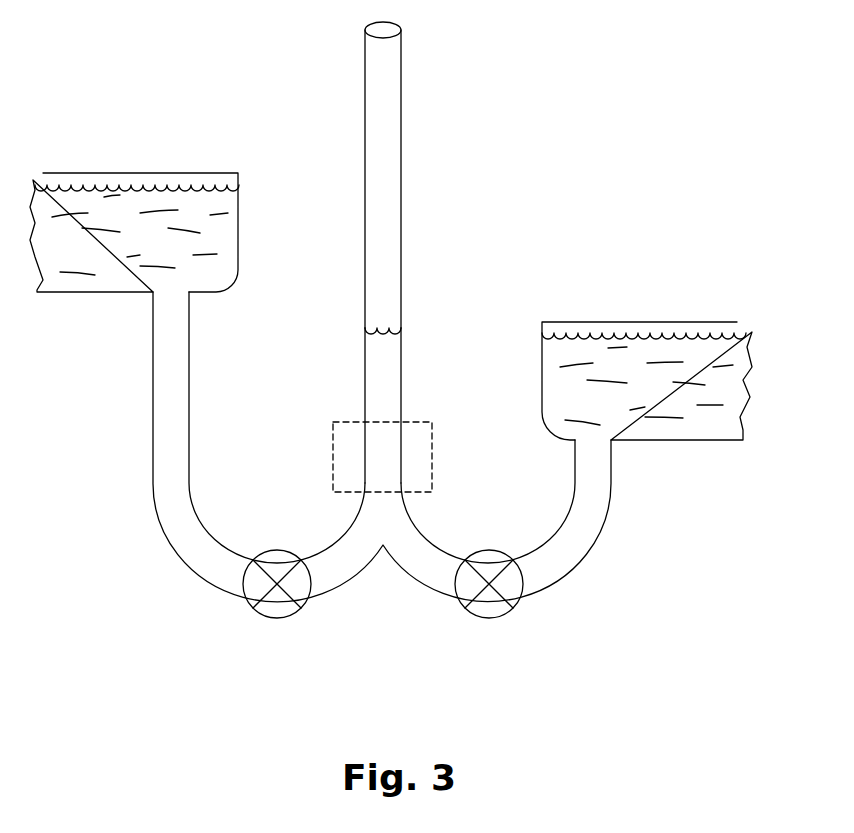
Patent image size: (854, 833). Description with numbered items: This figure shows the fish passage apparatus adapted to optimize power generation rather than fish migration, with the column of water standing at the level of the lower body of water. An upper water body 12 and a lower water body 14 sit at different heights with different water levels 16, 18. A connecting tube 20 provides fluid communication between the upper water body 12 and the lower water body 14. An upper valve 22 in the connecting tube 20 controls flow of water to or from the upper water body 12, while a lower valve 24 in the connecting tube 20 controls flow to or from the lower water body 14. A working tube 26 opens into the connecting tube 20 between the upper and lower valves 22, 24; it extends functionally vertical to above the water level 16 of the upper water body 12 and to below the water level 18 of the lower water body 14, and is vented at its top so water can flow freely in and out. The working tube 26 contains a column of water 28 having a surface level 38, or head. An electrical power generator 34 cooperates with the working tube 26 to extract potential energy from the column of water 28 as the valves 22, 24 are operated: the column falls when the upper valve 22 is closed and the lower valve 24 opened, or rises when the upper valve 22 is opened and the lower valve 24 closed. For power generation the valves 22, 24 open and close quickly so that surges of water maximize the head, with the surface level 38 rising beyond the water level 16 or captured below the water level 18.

The upper water body 12 is at (75, 195).
The lower water body 14 is at (595, 347).
The water level of the upper water body 16 is at (185, 185).
The water level of the lower water body 18 is at (702, 333).
The connecting tube 20 is at (340, 577).
The upper valve 22 is at (270, 605).
The lower valve 24 is at (497, 605).
The working tube 26 is at (402, 108).
The column of water 28 is at (377, 380).
The electrical power generator 34 is at (332, 455).
The surface level of the column of water 38 is at (393, 325).